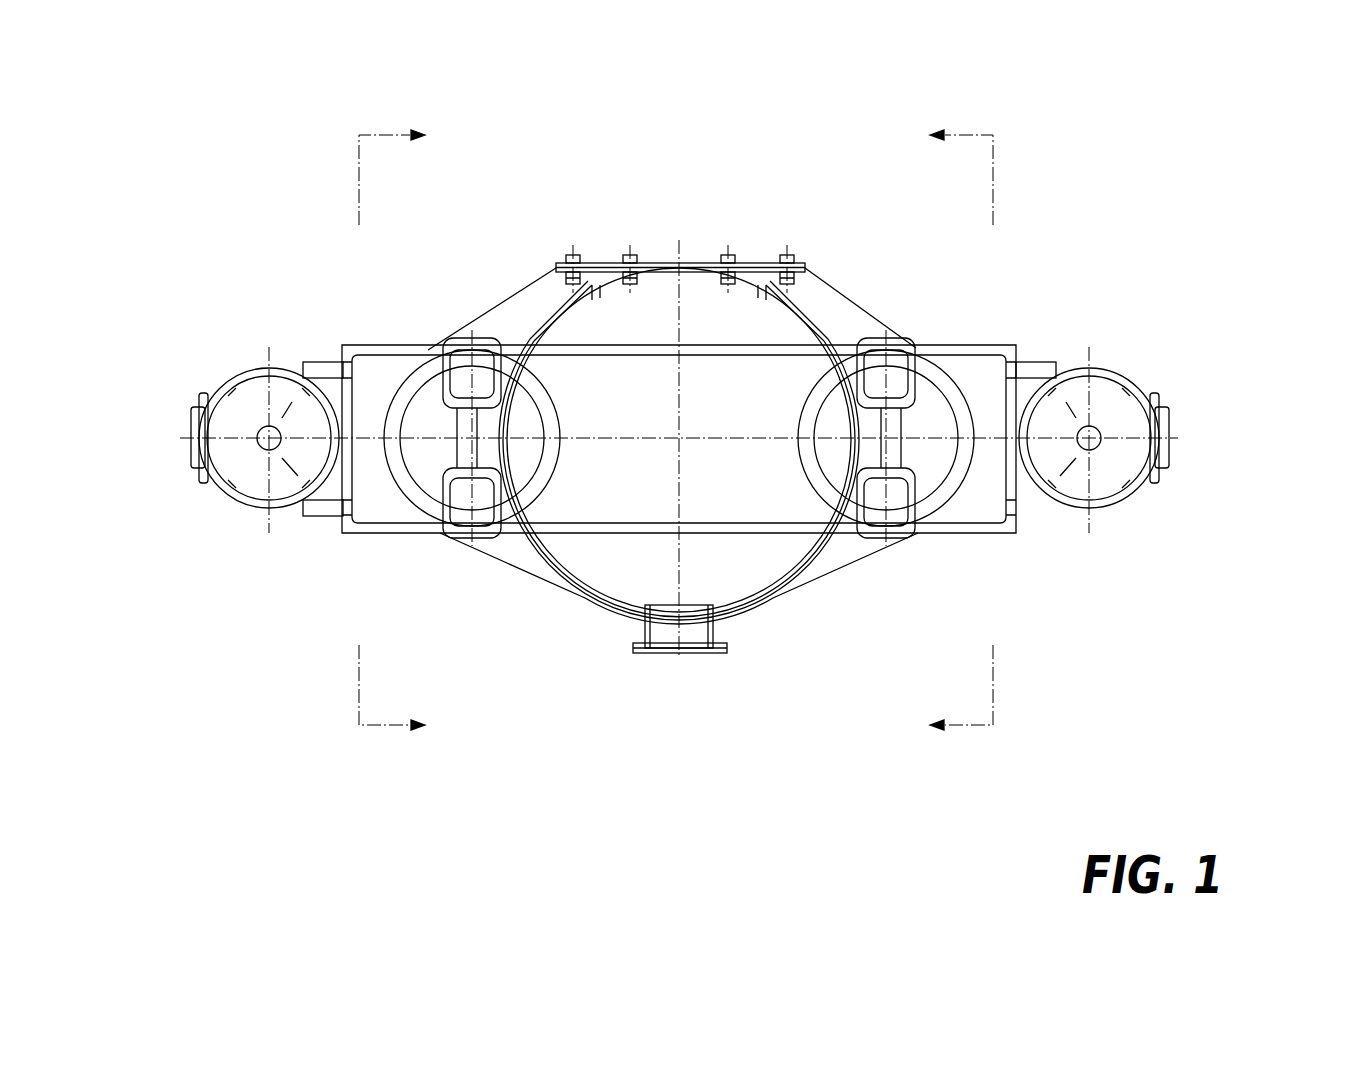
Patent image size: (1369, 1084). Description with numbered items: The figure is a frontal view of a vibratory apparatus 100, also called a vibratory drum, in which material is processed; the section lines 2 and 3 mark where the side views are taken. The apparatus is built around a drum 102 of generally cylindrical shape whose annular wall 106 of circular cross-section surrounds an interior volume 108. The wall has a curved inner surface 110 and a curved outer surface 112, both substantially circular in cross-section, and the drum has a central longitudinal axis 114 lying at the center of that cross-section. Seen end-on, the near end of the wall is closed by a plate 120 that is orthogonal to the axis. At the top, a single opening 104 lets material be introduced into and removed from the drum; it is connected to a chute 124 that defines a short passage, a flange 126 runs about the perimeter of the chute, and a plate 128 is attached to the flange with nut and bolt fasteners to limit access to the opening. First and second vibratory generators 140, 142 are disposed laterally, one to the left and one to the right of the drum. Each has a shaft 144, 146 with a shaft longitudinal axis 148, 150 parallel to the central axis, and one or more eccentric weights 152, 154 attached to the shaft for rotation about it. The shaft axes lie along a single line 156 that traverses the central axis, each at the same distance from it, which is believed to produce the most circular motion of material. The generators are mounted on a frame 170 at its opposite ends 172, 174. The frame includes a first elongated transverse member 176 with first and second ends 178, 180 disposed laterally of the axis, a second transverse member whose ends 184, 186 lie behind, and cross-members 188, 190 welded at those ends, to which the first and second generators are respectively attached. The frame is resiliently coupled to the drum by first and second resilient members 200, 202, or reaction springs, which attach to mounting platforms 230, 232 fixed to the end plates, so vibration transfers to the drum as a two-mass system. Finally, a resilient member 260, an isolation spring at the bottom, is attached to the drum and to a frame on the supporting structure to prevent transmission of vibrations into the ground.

The section line 2- 2 is at (392, 433).
The section line 3- 3 is at (961, 433).
The vibratory apparatus 100 is at (1210, 340).
The drum 102 is at (792, 312).
The opening 104 is at (650, 278).
The annular wall 106 is at (812, 588).
The interior volume 108 is at (757, 409).
The curved inner surface 110 is at (780, 604).
The curved outer surface 112 is at (828, 550).
The central longitudinal axis 114 is at (684, 443).
The plate 120 is at (552, 578).
The chute 124 is at (806, 270).
The flange 126 is at (553, 266).
The plate 128 is at (791, 262).
The first vibratory generator 140 is at (224, 372).
The second vibratory generator 142 is at (1107, 400).
The shaft 144 is at (290, 505).
The shaft 146 is at (1008, 500).
The shaft longitudinal axis 148 is at (206, 456).
The shaft longitudinal axis 150 is at (1110, 450).
The eccentric weight 152 is at (302, 365).
The eccentric weight 154 is at (1127, 415).
The line 156 is at (193, 405).
The frame 170 is at (510, 315).
The first end of frame 172 is at (312, 258).
The second end of frame 174 is at (1030, 296).
The first elongated transverse member 176 is at (376, 372).
The first end of first transverse member 178 is at (358, 532).
The second end of first transverse member 180 is at (1000, 532).
The first end of second transverse member 184 is at (510, 485).
The second end of second transverse member 186 is at (880, 484).
The cross-member 188 is at (332, 364).
The cross-member 190 is at (1020, 353).
The first resilient member 200 is at (441, 537).
The second resilient member 202 is at (925, 532).
The mounting platform 230 is at (412, 342).
The mounting platform 232 is at (946, 358).
The resilient member 260 is at (667, 633).